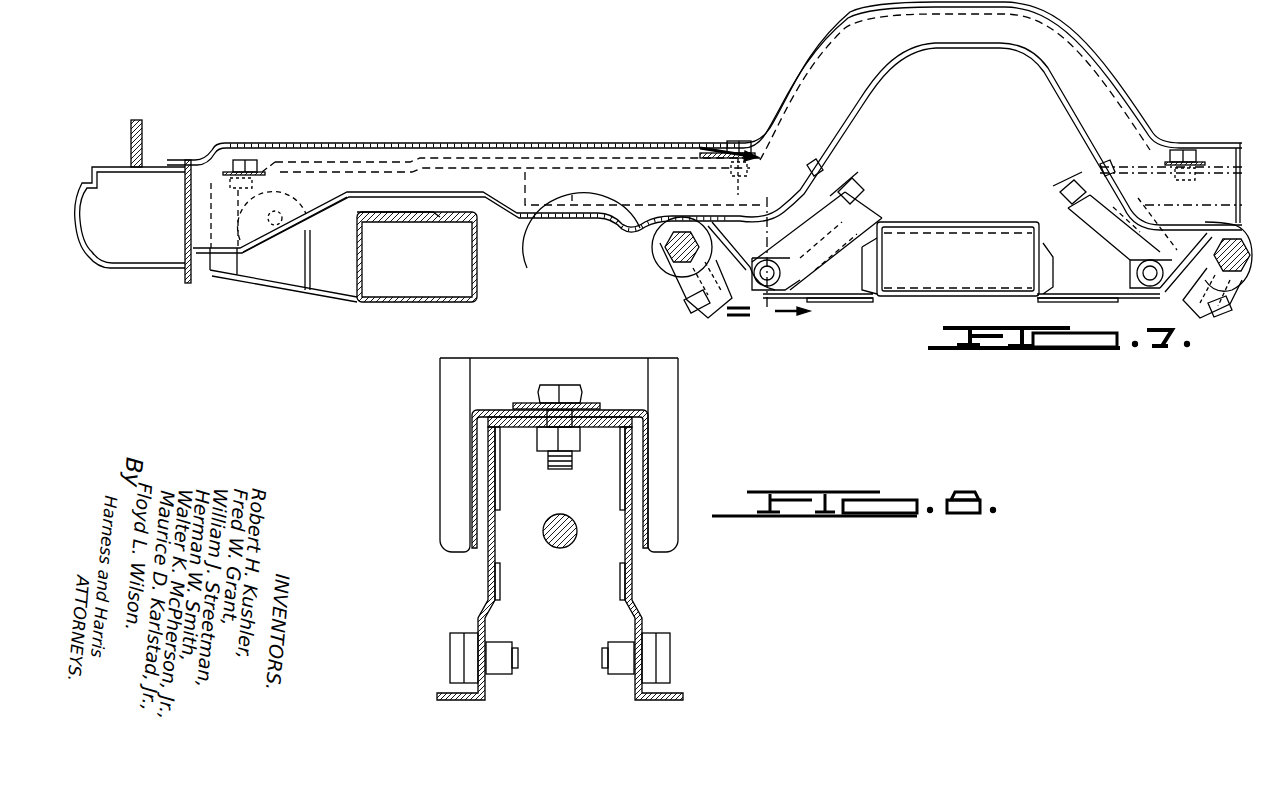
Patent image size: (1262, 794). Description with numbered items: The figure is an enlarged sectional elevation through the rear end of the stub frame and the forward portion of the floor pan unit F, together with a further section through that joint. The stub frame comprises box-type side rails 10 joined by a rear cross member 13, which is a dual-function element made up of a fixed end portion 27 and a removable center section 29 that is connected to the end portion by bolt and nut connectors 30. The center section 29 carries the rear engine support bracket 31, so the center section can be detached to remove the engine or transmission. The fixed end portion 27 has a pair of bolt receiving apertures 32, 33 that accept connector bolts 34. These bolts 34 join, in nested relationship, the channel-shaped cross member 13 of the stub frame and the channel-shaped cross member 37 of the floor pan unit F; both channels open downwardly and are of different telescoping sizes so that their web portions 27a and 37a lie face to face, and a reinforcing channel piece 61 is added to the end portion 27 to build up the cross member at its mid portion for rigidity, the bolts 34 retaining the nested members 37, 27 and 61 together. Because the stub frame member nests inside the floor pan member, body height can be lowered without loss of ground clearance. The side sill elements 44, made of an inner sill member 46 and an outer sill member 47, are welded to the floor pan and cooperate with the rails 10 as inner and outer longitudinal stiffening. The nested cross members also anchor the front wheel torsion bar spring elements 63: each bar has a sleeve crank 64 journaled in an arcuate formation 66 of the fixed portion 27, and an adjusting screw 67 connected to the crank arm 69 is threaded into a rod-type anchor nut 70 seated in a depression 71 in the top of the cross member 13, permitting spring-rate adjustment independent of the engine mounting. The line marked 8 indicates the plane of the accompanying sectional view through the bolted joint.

In FIG. 7, the floor pan unit F is at (820, 54).
In FIG. 7, the section line 8— 8 is at (755, 239).
In FIG. 7, the side rail 10 is at (377, 307).
In FIG. 7, the rear cross member 13 is at (856, 312).
In FIG. 8, the rear cross member 13 is at (480, 573).
In FIG. 7, the fixed end portion 27 is at (273, 287).
In FIG. 8, the fixed end portion 27 is at (637, 567).
In FIG. 8, the web portion 27a is at (528, 428).
In FIG. 7, the removable center section 29 is at (1100, 287).
In FIG. 8, the removable center section 29 is at (497, 613).
In FIG. 7, the bolt and nut connector 30 is at (858, 197).
In FIG. 8, the bolt and nut connector 30 is at (460, 655).
In FIG. 7, the rear engine support bracket 31 is at (943, 221).
In FIG. 7, the bolt receiving aperture 32 is at (738, 175).
In FIG. 8, the bolt receiving aperture 32 is at (585, 403).
In FIG. 7, the bolt receiving aperture 33 is at (207, 153).
In FIG. 7, the connector bolt 34 is at (245, 160).
In FIG. 8, the connector bolt 34 is at (568, 393).
In FIG. 7, the cross member 37 is at (870, 92).
In FIG. 8, the cross member 37 is at (652, 455).
In FIG. 8, the web portion 37a is at (500, 410).
In FIG. 7, the side sill element 44 is at (108, 165).
In FIG. 7, the inner sill member 46 is at (190, 286).
In FIG. 7, the outer sill member 47 is at (125, 270).
In FIG. 7, the reinforcing channel piece 61 is at (607, 223).
In FIG. 8, the reinforcing channel piece 61 is at (627, 487).
In FIG. 7, the torsion bar spring element 63 is at (665, 258).
In FIG. 7, the sleeve crank 64 is at (655, 240).
In FIG. 7, the arcuate formation 66 is at (670, 218).
In FIG. 7, the adjusting screw 67 is at (684, 302).
In FIG. 8, the adjusting screw 67 is at (560, 540).
In FIG. 7, the crank arm 69 is at (697, 312).
In FIG. 7, the anchor nut 70 is at (823, 186).
In FIG. 7, the depression 71 is at (806, 168).